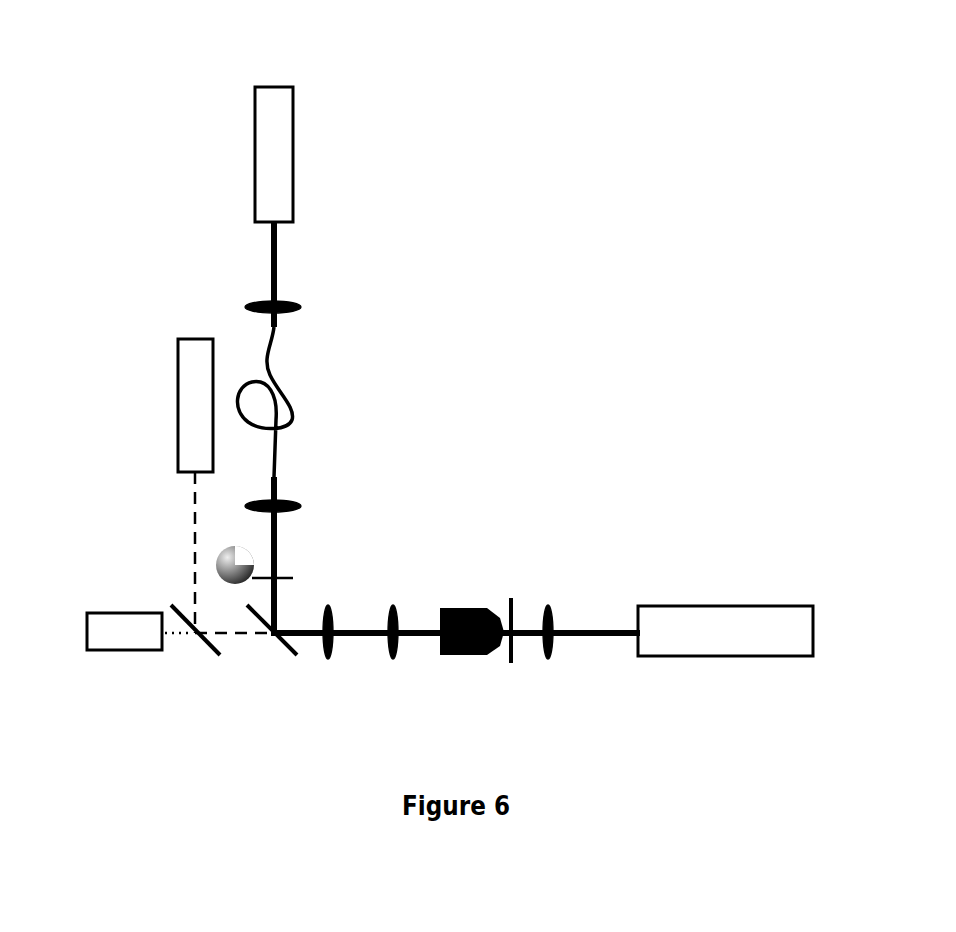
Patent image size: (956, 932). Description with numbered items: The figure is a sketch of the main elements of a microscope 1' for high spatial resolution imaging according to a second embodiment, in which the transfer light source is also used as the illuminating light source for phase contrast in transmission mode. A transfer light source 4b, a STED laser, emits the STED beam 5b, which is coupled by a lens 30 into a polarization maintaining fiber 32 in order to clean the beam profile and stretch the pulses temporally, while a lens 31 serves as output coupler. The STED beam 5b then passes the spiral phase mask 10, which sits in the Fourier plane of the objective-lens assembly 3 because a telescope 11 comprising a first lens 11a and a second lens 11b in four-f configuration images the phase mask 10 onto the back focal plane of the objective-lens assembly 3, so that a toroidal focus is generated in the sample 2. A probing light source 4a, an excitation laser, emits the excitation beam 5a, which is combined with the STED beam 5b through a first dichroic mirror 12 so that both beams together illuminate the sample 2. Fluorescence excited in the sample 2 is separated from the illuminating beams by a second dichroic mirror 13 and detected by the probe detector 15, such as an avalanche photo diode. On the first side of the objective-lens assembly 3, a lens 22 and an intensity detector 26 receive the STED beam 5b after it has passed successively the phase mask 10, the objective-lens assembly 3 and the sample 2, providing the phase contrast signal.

The microscope 1' is at (562, 80).
The transfer light source 4b is at (288, 178).
The STED beam 5b is at (279, 262).
The lens 30 is at (299, 307).
The polarization maintaining fiber 32 is at (285, 379).
The lens 31 is at (286, 503).
The probing light source 4a is at (178, 410).
The excitation beam 5a is at (192, 493).
The phase mask 10 is at (206, 558).
The probe detector 15 is at (100, 647).
The first dichroic mirror 12 is at (207, 647).
The second dichroic mirror 13 is at (285, 652).
The telescope 11 is at (365, 696).
The first lens 11a is at (332, 612).
The second lens 11b is at (391, 610).
The objective-lens assembly 3 is at (444, 607).
The sample 2 is at (506, 602).
The lens 22 is at (552, 610).
The intensity detector 26 is at (700, 605).